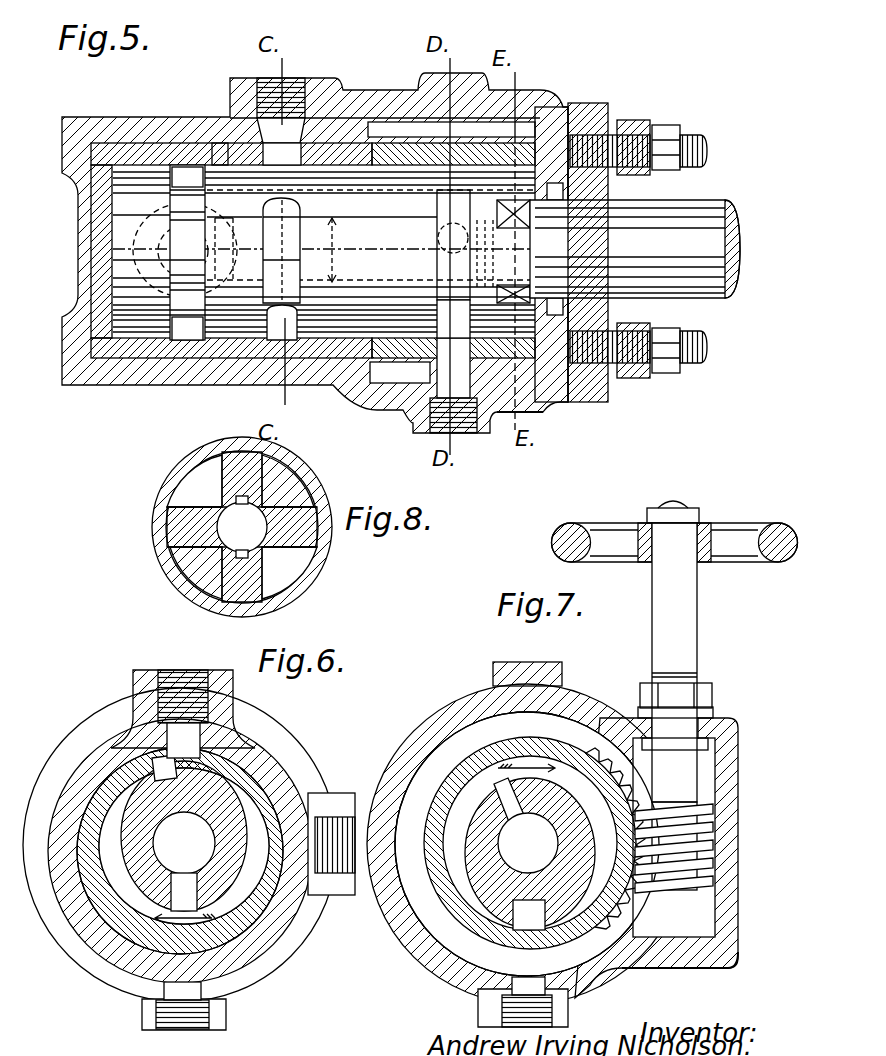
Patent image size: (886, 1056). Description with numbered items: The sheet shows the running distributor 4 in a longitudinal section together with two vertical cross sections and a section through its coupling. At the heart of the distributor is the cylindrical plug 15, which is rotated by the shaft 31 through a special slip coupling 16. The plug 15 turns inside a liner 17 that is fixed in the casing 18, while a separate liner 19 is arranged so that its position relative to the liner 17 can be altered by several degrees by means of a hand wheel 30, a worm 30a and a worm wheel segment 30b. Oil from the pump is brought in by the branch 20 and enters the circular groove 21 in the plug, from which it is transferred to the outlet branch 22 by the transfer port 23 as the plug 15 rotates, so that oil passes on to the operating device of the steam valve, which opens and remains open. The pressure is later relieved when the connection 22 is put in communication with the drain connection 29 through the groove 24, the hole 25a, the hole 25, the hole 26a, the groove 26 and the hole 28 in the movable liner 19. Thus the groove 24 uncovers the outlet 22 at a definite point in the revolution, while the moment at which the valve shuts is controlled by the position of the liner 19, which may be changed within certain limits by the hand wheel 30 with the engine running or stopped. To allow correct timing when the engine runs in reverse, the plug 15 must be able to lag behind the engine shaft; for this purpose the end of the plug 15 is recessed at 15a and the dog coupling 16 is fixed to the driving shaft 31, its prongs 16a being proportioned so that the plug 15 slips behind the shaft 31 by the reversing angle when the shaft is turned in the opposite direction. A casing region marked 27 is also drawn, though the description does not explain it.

In FIG. 5, the running distributor 4 is at (551, 239).
In FIG. 5, the cylindrical plug 15 is at (340, 128).
In FIG. 8, the cylindrical plug 15 is at (166, 508).
In FIG. 6, the cylindrical plug 15 is at (295, 835).
In FIG. 7, the cylindrical plug 15 is at (486, 820).
In FIG. 8, the recess 15a is at (202, 480).
In FIG. 5, the slip coupling 16 is at (528, 250).
In FIG. 8, the slip coupling 16 is at (200, 548).
In FIG. 5, the prongs 16a is at (571, 150).
In FIG. 8, the prongs 16a is at (186, 527).
In FIG. 5, the liner 17 is at (108, 152).
In FIG. 6, the liner 17 is at (230, 825).
In FIG. 5, the casing 18 is at (141, 130).
In FIG. 6, the casing 18 is at (140, 690).
In FIG. 7, the casing 18 is at (486, 700).
In FIG. 5, the separate liner 19 is at (460, 150).
In FIG. 7, the separate liner 19 is at (560, 745).
In FIG. 5, the branch 20 is at (175, 346).
In FIG. 6, the branch 20 is at (340, 895).
In FIG. 5, the circular groove 21 is at (195, 332).
In FIG. 5, the branch 22 is at (296, 86).
In FIG. 6, the branch 22 is at (172, 670).
In FIG. 5, the transfer port 23 is at (222, 152).
In FIG. 6, the transfer port 23 is at (158, 766).
In FIG. 5, the groove 24 is at (286, 326).
In FIG. 6, the groove 24 is at (132, 898).
In FIG. 5, the hole 25 is at (426, 250).
In FIG. 6, the hole 25 is at (184, 843).
In FIG. 7, the hole 25 is at (528, 843).
In FIG. 5, the hole 25a is at (282, 296).
In FIG. 6, the hole 25a is at (183, 898).
In FIG. 5, the groove 26 is at (445, 190).
In FIG. 7, the groove 26 is at (472, 896).
In FIG. 5, the hole 26a is at (442, 262).
In FIG. 7, the hole 26a is at (505, 815).
In FIG. 5, the passage 27 is at (546, 414).
In FIG. 7, the passage 27 is at (600, 950).
In FIG. 5, the hole 28 is at (424, 392).
In FIG. 7, the hole 28 is at (574, 990).
In FIG. 5, the drain connection 29 is at (466, 420).
In FIG. 6, the drain connection 29 is at (195, 1032).
In FIG. 7, the drain connection 29 is at (510, 1028).
In FIG. 7, the hand wheel 30 is at (718, 527).
In FIG. 7, the worm 30a is at (714, 862).
In FIG. 7, the worm wheel segment 30b is at (638, 886).
In FIG. 5, the shaft 31 is at (635, 249).
In FIG. 8, the shaft 31 is at (250, 525).